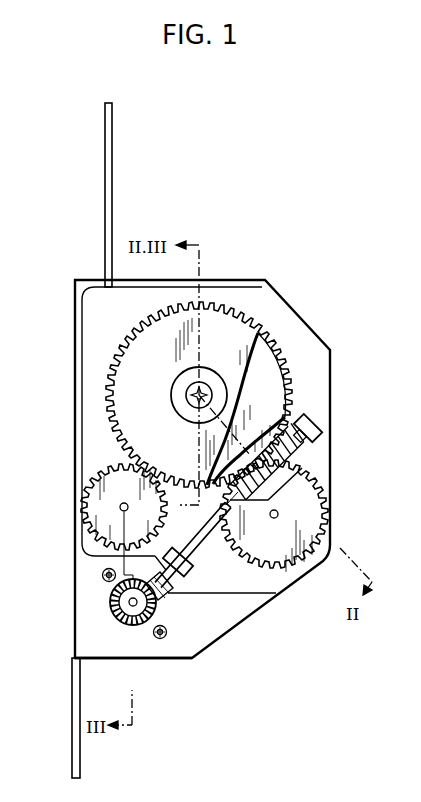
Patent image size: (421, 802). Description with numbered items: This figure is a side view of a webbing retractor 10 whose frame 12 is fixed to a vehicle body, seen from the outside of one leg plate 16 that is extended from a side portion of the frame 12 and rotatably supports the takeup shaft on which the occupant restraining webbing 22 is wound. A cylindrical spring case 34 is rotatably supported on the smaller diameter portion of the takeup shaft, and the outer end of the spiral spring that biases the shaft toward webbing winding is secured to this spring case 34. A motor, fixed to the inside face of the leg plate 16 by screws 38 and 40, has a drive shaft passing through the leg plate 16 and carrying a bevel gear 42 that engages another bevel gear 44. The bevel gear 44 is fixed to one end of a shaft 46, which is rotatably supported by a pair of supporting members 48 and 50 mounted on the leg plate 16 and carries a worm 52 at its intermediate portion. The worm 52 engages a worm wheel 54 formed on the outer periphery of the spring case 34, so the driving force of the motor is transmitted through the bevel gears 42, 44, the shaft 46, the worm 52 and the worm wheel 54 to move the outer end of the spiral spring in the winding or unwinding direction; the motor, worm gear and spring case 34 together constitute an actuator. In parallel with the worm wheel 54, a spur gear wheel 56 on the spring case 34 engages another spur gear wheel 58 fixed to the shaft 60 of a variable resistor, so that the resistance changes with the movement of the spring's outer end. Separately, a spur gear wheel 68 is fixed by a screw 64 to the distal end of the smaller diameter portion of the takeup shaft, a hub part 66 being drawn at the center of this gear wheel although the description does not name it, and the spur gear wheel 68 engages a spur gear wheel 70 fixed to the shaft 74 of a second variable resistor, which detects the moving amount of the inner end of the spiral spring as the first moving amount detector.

The webbing retractor 10 is at (287, 297).
The frame 12 is at (72, 676).
The leg plate 16 is at (196, 666).
The occupant restraining webbing 22 is at (112, 172).
The spring case 34 is at (274, 378).
The screw 38 is at (104, 580).
The screw 40 is at (167, 632).
The bevel gear 42 is at (124, 622).
The bevel gear 44 is at (160, 603).
The shaft 46 is at (201, 540).
The supporting member 48 is at (322, 431).
The supporting member 50 is at (187, 572).
The worm 52 is at (298, 455).
The worm wheel 54 is at (213, 394).
The spur gear wheel 56 is at (272, 340).
The spur gear wheel 58 is at (290, 576).
The shaft 60 is at (279, 514).
The screw 64 is at (187, 388).
The hub 66 is at (174, 404).
The spur gear wheel 68 is at (232, 312).
The spur gear wheel 70 is at (90, 531).
The shaft 74 is at (120, 506).